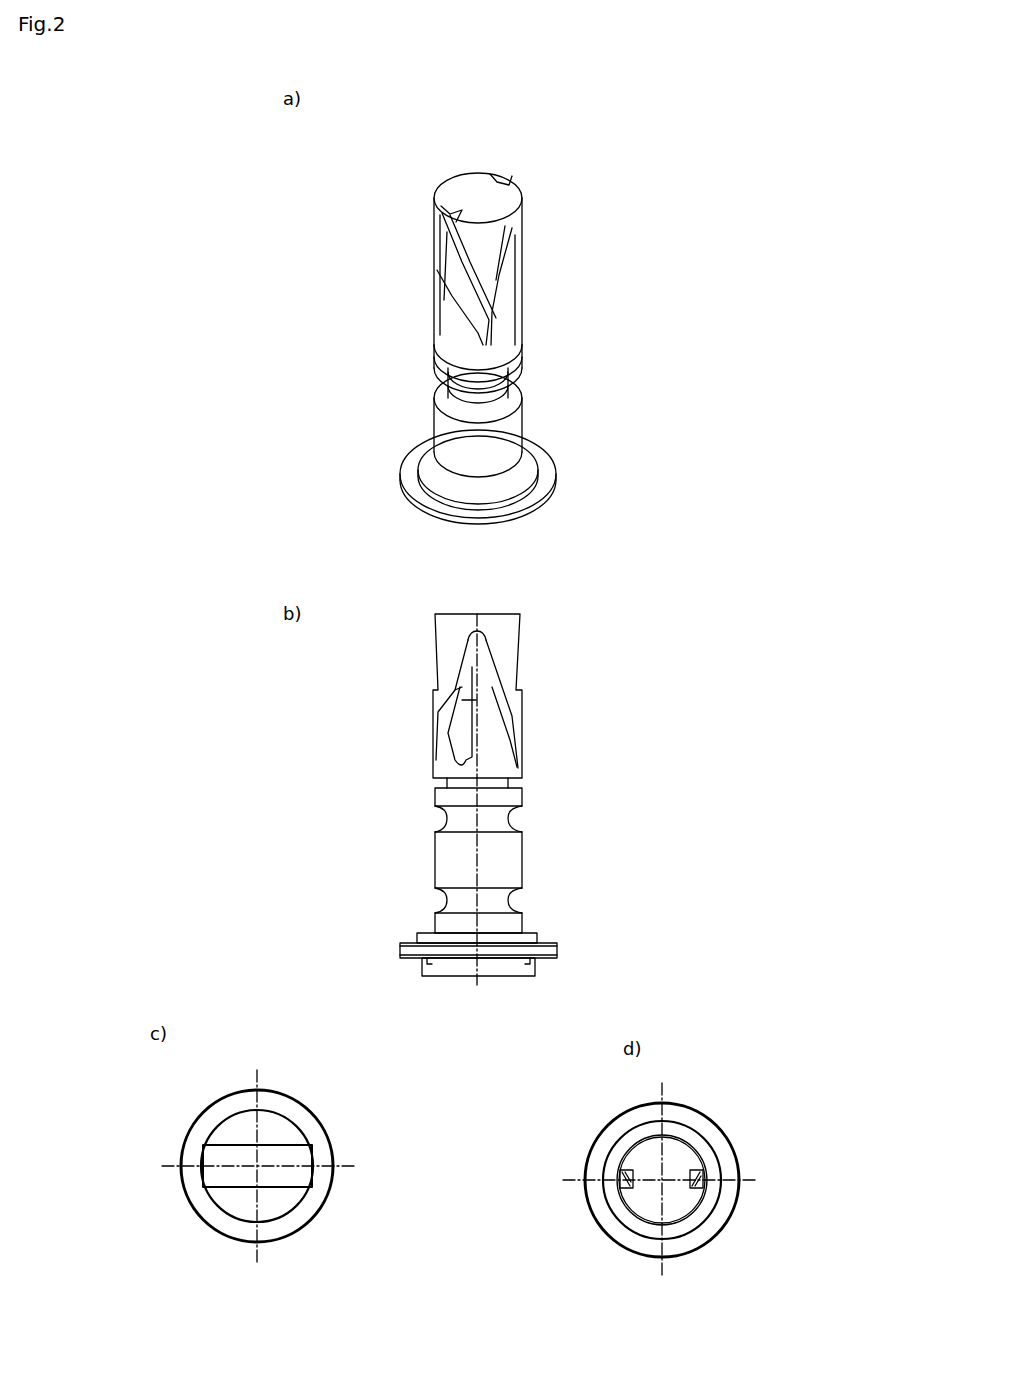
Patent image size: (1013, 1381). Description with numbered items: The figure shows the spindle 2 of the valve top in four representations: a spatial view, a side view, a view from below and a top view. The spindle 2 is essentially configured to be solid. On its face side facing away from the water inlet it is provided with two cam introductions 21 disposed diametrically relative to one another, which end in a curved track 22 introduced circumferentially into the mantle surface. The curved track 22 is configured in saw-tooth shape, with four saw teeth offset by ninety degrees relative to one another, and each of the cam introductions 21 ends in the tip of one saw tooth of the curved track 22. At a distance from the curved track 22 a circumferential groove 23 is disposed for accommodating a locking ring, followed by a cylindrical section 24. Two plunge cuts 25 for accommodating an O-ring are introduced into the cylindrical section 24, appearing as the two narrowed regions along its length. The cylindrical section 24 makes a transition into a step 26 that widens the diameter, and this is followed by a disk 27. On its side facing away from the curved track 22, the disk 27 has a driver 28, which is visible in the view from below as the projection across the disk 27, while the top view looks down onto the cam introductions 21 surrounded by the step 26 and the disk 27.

The spindle 2 is at (586, 95).
The cam introductions 21 is at (502, 181).
The curved track 22 is at (503, 243).
The circumferential groove 23 is at (445, 347).
The cylindrical section 24 is at (520, 858).
The plunge cuts 25 is at (522, 372).
The step 26 is at (532, 458).
The disk 27 is at (537, 483).
The driver 28 is at (520, 970).